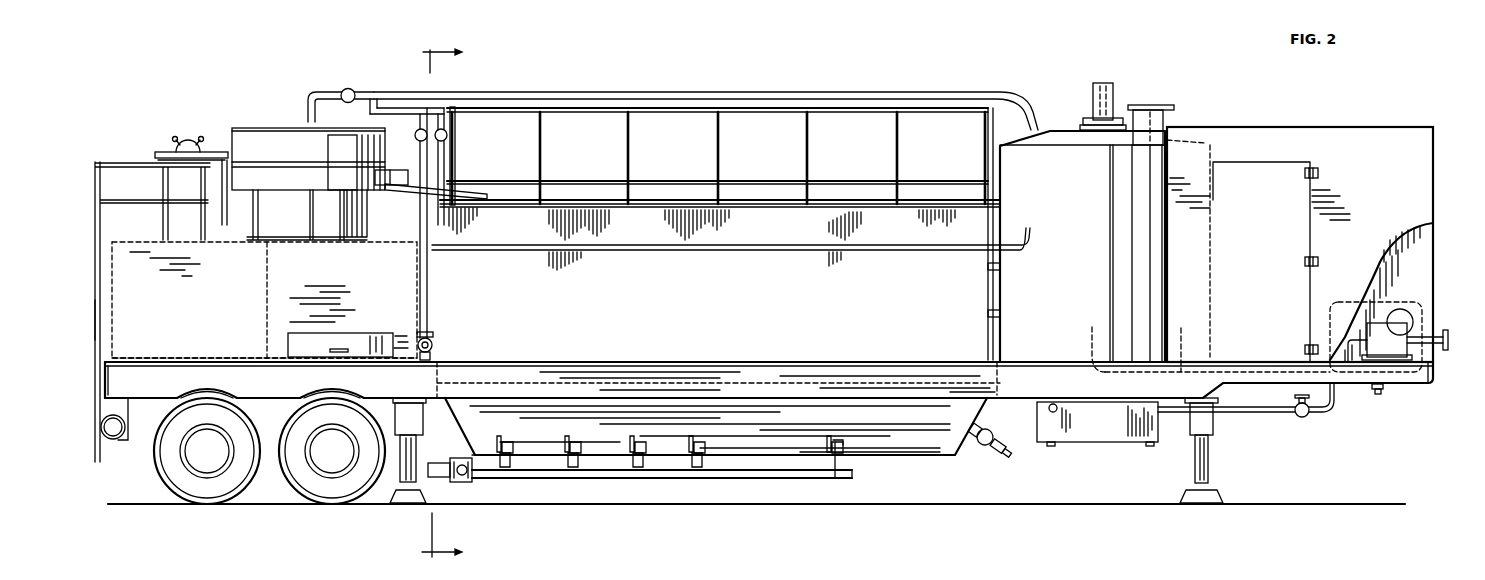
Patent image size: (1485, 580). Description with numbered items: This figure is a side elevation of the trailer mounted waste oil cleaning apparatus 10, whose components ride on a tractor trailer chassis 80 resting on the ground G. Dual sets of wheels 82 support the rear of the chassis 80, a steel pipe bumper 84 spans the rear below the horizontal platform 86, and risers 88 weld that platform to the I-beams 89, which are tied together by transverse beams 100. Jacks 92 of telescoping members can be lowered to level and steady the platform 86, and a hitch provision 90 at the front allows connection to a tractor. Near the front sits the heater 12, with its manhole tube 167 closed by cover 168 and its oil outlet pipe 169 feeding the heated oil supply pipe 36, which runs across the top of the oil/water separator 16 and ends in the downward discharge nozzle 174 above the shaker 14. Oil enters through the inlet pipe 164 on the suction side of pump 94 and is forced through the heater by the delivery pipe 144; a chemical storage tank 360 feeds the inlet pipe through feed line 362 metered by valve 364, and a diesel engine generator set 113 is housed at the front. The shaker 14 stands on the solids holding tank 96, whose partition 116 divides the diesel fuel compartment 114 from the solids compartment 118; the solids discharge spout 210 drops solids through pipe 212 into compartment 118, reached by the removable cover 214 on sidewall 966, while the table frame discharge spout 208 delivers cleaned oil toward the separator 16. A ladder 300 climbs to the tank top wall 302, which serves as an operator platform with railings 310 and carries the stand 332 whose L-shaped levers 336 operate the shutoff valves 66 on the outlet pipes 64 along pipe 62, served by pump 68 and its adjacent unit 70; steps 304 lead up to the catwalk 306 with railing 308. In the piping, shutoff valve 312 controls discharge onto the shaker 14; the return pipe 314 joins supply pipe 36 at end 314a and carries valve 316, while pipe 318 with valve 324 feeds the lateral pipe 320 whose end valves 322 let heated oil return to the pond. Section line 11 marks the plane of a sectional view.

The waste oil cleaning apparatus 10 is at (626, 88).
The section line 11 is at (442, 303).
The heater 12 is at (1183, 102).
The solids separator 14 is at (262, 110).
The oil/water separator tank 16 is at (889, 84).
The heated oil supply pipe 36 is at (790, 93).
The spray pipe 62 is at (588, 479).
The manifold 64 is at (578, 458).
The shutoff valve 66 is at (643, 449).
The pump 68 is at (466, 482).
The valve box 70 is at (434, 463).
The tractor trailer chassis 80 is at (890, 412).
The wheels 82 is at (308, 487).
The pipe bumper 84 is at (113, 440).
The horizontal platform 86 is at (240, 358).
The risers 88 is at (124, 412).
The I-beams 89 is at (722, 390).
The hitch provision 90 is at (1378, 396).
The jacks 92 is at (397, 478).
The pump 94 is at (1366, 290).
The solids holding tank 96 is at (150, 248).
The transverse beams 100 is at (458, 386).
The diesel engine generator set 113 is at (1400, 320).
The diesel fuel storage compartment 114 is at (226, 311).
The vertical transverse partition 116 is at (268, 290).
The solids holding compartment 118 is at (390, 314).
The oil delivery pipe 144 is at (1090, 340).
The oil inlet pipe 164 is at (1437, 364).
The manhole tube 167 is at (1150, 112).
The cover 168 is at (1176, 108).
The heater oil outlet pipe 169 is at (1045, 128).
The discharge nozzle 174 is at (304, 120).
The table frame discharge spout 208 is at (390, 186).
The solids discharge spout 210 is at (330, 145).
The metal pipe 212 is at (343, 241).
The removable cover 214 is at (300, 337).
The ladder 300 is at (97, 318).
The top wall 302 is at (246, 234).
The steps 304 is at (422, 232).
The catwalk 306 is at (677, 105).
The railing 308 is at (945, 107).
The railings 310 is at (128, 162).
The shutoff valve 312 is at (343, 89).
The oil return pipe 314 is at (366, 116).
The return pipe end 314a is at (372, 100).
The shutoff valve 316 is at (457, 158).
The pipe 318 is at (405, 142).
The horizontal pipe 320 is at (438, 340).
The valves 322 is at (422, 355).
The shutoff valve 324 is at (447, 132).
The stand 332 is at (212, 152).
The L-shaped levers 336 is at (182, 141).
The chemical storage tank 360 is at (1087, 432).
The chemical feed line 362 is at (1246, 414).
The valve 364 is at (1304, 418).
The frame rail 966 is at (270, 388).
The ground G is at (1340, 504).